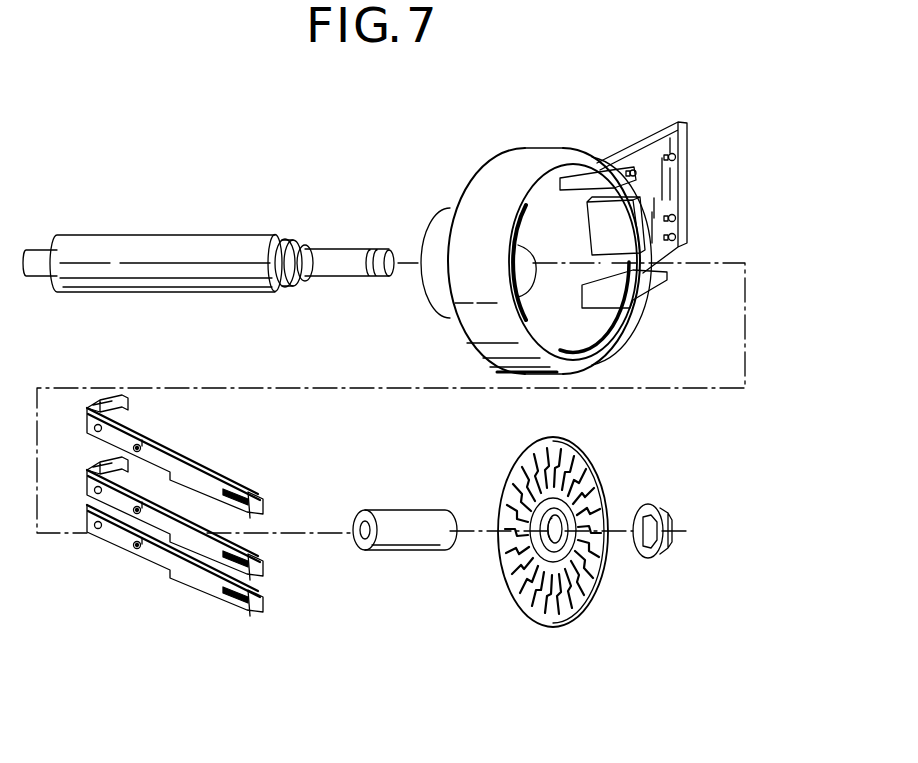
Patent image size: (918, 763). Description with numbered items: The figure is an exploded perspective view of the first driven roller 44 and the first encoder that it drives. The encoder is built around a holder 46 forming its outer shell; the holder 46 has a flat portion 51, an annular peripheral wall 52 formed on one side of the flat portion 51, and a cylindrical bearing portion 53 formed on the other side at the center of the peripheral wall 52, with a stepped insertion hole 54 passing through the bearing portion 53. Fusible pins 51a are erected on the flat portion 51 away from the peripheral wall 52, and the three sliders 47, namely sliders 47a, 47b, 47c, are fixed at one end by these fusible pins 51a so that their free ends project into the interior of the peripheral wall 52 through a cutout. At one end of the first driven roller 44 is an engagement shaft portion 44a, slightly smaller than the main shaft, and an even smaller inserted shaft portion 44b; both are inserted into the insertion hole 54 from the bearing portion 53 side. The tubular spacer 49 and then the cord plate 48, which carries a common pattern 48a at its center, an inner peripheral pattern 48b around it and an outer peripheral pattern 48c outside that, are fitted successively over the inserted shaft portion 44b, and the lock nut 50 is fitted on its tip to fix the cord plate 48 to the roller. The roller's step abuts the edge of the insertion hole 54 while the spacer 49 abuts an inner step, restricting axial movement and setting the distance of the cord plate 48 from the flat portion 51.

The first driven roller 44 is at (172, 233).
The engagement shaft portion 44a is at (296, 241).
The inserted shaft portion 44b is at (344, 248).
The holder 46 is at (545, 147).
The sliders 47 is at (376, 574).
The slider 47a is at (265, 510).
The slider 47b is at (265, 580).
The slider 47c is at (265, 607).
The cord plate 48 is at (558, 574).
The common pattern 48a is at (575, 562).
The inner peripheral pattern 48b is at (585, 578).
The outer peripheral pattern 48c is at (583, 620).
The tubular spacer 49 is at (408, 510).
The lock nut 50 is at (655, 558).
The flat portion 51 is at (688, 146).
The fusible pins 51a is at (683, 237).
The annular peripheral wall 52 is at (470, 177).
The cylindrical bearing portion 53 is at (428, 224).
The insertion hole 54 is at (533, 297).